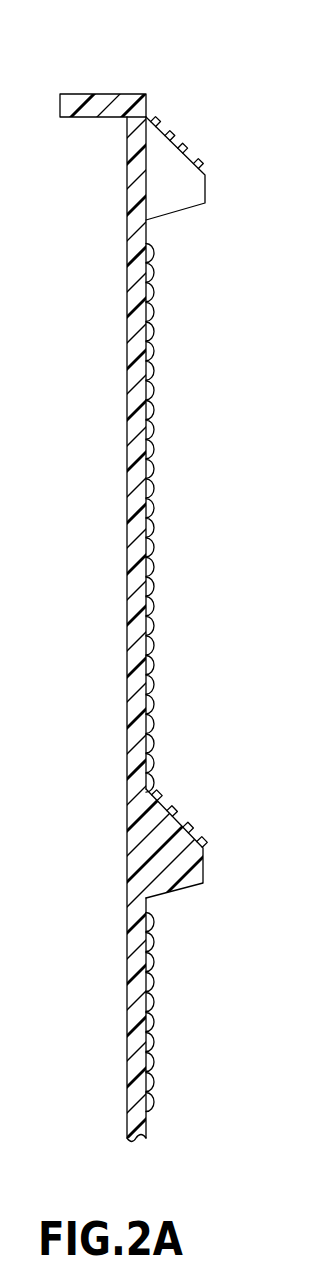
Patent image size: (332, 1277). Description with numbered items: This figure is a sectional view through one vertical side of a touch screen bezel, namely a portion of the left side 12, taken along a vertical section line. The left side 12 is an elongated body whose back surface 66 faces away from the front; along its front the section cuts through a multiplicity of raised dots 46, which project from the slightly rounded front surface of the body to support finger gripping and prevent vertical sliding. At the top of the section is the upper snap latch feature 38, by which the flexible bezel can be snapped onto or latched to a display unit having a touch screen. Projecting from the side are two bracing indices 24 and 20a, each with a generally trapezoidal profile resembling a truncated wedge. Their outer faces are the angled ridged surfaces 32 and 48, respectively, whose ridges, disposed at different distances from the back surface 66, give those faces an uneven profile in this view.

The left side 12 is at (127, 305).
The left bracing index 20a is at (205, 867).
The bracing index 24 is at (205, 192).
The angled ridged surface 32 is at (175, 127).
The upper snap latch feature 38 is at (93, 93).
The raised dots 46 is at (152, 290).
The angled ridged surface 48 is at (193, 826).
The back surface 66 is at (127, 382).